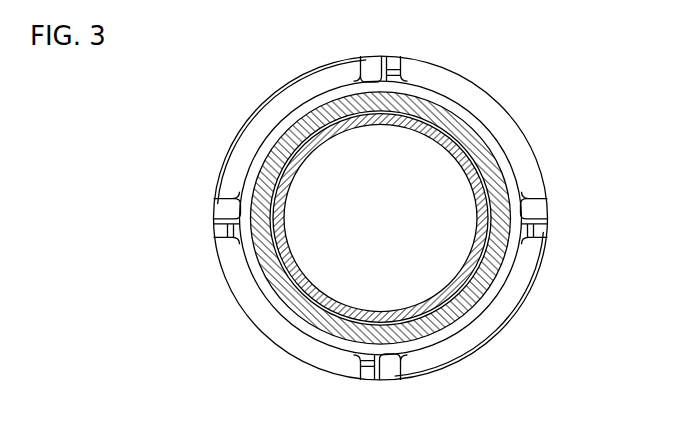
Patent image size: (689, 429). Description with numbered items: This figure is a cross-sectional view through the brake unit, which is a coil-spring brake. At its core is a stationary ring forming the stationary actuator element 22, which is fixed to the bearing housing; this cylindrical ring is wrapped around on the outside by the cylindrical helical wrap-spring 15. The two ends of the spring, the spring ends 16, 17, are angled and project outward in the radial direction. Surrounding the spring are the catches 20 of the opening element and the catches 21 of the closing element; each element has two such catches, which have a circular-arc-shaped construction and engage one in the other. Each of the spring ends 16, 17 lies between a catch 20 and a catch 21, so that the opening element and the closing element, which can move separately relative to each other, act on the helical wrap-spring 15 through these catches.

The helical wrap-spring 15 is at (465, 323).
The spring end 16 is at (371, 92).
The spring end 17 is at (546, 214).
The catch 20 is at (493, 100).
The catch 21 is at (268, 104).
The stationary actuator element 22 is at (378, 338).